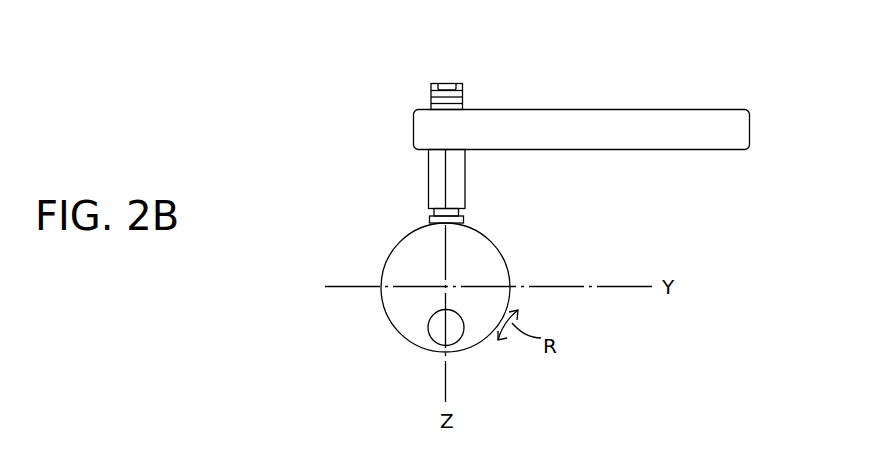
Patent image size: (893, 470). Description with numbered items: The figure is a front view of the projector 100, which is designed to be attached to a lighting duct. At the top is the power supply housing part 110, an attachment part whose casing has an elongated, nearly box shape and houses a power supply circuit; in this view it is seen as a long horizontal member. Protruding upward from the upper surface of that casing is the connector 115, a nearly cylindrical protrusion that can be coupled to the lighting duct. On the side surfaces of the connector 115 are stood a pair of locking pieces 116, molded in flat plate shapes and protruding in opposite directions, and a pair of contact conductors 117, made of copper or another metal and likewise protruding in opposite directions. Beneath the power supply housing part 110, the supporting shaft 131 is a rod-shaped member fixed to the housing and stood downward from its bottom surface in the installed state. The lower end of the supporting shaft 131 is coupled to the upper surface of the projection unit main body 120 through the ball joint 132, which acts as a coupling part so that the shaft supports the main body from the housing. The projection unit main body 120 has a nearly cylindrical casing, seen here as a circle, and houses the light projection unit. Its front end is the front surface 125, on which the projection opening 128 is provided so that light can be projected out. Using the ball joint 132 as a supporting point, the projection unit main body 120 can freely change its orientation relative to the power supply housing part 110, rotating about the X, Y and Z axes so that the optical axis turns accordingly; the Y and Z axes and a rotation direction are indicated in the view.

The projector 100 is at (323, 88).
The power supply housing part 110 is at (684, 118).
The connector 115 is at (463, 90).
The locking pieces 116 is at (431, 96).
The contact conductors 117 is at (447, 83).
The projection unit main body 120 is at (388, 316).
The front surface 125 is at (415, 333).
The projection opening 128 is at (460, 339).
The supporting shaft 131 is at (458, 180).
The ball joint 132 is at (428, 211).